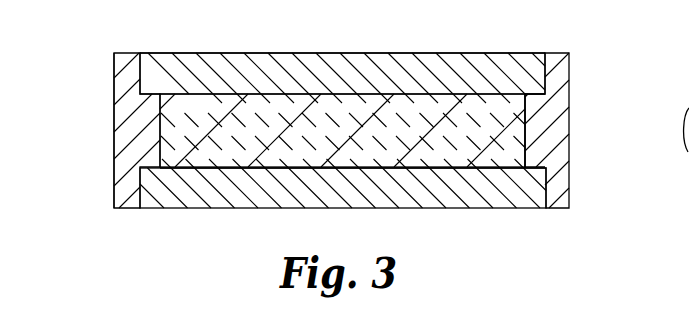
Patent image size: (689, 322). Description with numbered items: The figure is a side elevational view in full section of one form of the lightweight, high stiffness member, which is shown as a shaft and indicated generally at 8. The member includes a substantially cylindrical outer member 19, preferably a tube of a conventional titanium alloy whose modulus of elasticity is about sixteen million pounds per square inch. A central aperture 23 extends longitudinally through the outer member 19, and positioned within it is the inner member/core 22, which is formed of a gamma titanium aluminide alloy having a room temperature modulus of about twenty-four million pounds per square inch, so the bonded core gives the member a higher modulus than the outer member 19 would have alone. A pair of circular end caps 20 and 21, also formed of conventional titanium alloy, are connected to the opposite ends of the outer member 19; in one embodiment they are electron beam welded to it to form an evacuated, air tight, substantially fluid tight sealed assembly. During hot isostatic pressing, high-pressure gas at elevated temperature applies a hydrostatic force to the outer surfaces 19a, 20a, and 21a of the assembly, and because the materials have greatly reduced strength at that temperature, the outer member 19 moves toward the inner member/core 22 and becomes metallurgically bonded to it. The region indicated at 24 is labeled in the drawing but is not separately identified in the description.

The sealed assembly 8 is at (93, 131).
The substantially cylindrical outer member 19 is at (192, 53).
The outer surface of outer member 19a is at (312, 53).
The circular end cap 20 is at (124, 183).
The outer surface of end cap 20a is at (114, 80).
The circular end cap 21 is at (562, 190).
The outer surface of end cap 21a is at (570, 118).
The inner member/core 22 is at (473, 103).
The central aperture 23 is at (200, 168).
The spacer portion of side wall 24 is at (533, 118).